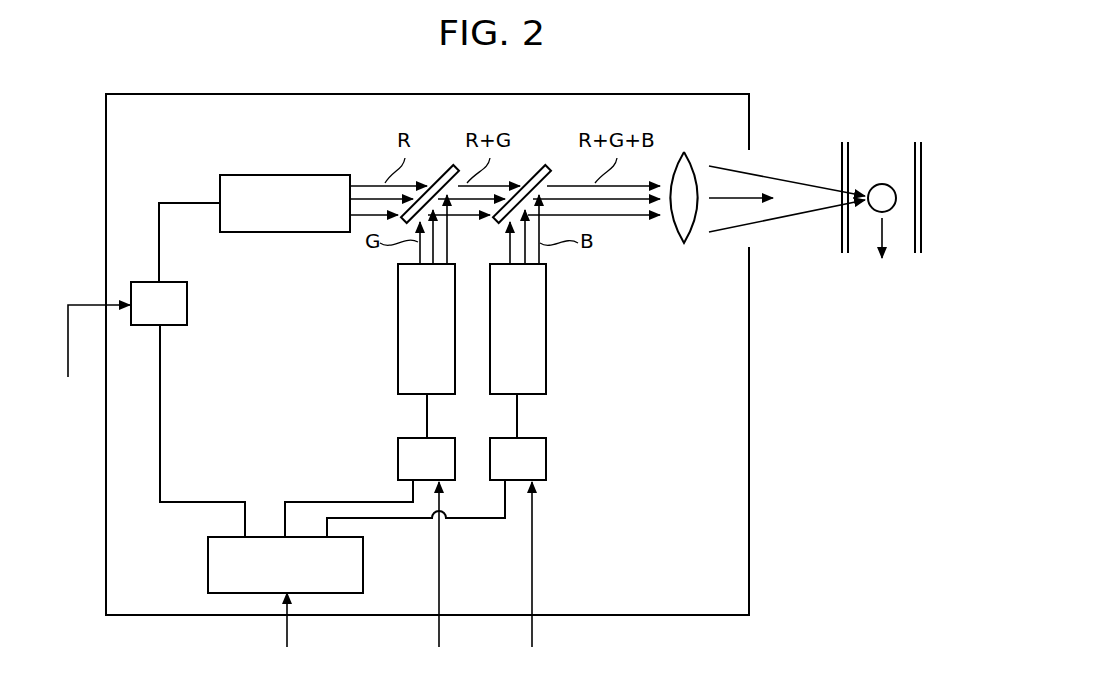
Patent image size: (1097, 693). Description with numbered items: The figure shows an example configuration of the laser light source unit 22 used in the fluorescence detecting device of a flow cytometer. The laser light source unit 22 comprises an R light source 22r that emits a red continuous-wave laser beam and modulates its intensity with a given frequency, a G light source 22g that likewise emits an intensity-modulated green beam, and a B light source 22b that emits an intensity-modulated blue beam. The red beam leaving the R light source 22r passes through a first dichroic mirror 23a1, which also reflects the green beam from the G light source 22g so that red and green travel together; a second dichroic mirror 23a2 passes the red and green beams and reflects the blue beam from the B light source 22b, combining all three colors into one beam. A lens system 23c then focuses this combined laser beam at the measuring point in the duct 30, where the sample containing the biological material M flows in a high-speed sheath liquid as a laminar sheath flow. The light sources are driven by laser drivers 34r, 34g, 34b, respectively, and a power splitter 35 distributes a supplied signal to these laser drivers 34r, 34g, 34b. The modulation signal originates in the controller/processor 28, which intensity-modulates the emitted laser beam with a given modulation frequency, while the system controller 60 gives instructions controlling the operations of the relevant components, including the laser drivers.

The laser light source unit 22 is at (749, 382).
The R light source 22r is at (259, 232).
The G light source 22g is at (398, 322).
The B light source 22b is at (546, 322).
The dichroic mirror 23a1 is at (440, 165).
The dichroic mirror 23a2 is at (531, 165).
The lens system 23c is at (684, 243).
The duct 30 is at (842, 248).
The laser driver 34r is at (177, 325).
The laser driver 34g is at (398, 460).
The laser driver 34b is at (546, 460).
The power splitter 35 is at (208, 567).
The controller/processor 28 is at (287, 634).
The system controller 60 is at (300, 490).
The biological material M is at (881, 184).